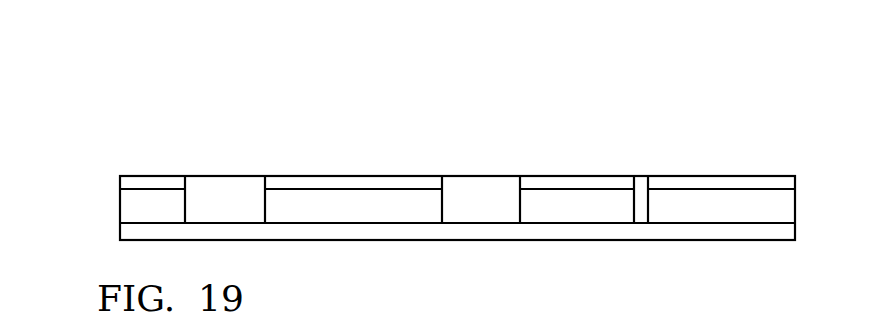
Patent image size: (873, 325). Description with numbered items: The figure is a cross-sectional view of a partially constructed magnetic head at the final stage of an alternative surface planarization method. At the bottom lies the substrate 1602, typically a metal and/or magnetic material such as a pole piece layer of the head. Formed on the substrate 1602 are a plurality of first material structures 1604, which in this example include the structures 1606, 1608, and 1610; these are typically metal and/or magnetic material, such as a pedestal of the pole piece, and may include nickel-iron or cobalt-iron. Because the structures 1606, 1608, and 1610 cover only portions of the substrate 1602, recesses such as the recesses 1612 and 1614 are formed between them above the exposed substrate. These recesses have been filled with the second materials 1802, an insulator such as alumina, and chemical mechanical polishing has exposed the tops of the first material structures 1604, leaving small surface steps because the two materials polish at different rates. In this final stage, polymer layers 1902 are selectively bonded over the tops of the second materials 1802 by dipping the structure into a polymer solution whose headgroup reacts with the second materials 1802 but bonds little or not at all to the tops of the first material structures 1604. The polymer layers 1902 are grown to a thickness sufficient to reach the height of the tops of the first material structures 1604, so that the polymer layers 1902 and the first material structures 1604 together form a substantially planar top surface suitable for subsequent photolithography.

The first material structures 1604 is at (190, 97).
The substrate 1602 is at (119, 229).
The second materials 1802 is at (131, 208).
The polymer layers 1902 is at (148, 185).
The structure 1606 is at (223, 176).
The recess 1612 is at (397, 210).
The structure 1608 is at (475, 177).
The recess 1614 is at (582, 210).
The structure 1610 is at (640, 177).